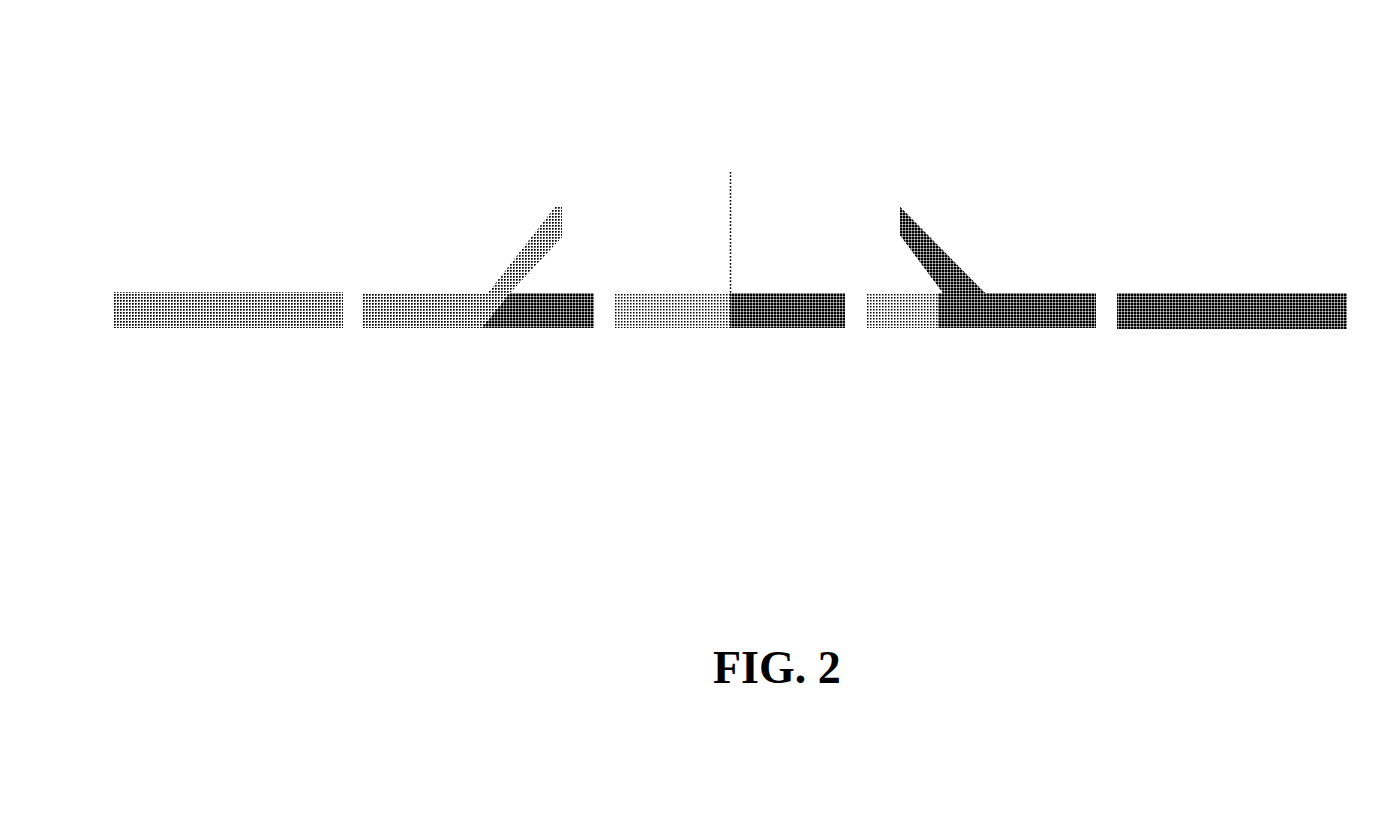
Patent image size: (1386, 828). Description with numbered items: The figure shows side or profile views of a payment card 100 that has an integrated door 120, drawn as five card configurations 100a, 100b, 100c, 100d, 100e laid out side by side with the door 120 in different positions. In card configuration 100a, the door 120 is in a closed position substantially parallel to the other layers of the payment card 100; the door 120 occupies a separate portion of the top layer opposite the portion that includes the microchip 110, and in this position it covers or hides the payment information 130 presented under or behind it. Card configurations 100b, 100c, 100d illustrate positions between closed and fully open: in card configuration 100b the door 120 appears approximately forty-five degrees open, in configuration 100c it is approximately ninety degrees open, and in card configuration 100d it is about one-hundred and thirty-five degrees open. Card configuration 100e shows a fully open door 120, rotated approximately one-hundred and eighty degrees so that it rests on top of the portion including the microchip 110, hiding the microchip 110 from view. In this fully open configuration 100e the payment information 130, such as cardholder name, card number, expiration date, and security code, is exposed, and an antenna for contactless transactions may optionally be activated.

The payment card 100 is at (733, 224).
The card configuration 100a is at (223, 353).
The card configuration 100b is at (475, 353).
The card configuration 100c is at (727, 348).
The card configuration 100d is at (978, 355).
The card configuration 100e is at (1231, 347).
The microchip 110 is at (153, 293).
The integrated door 120 is at (280, 293).
The payment information 130 is at (568, 282).